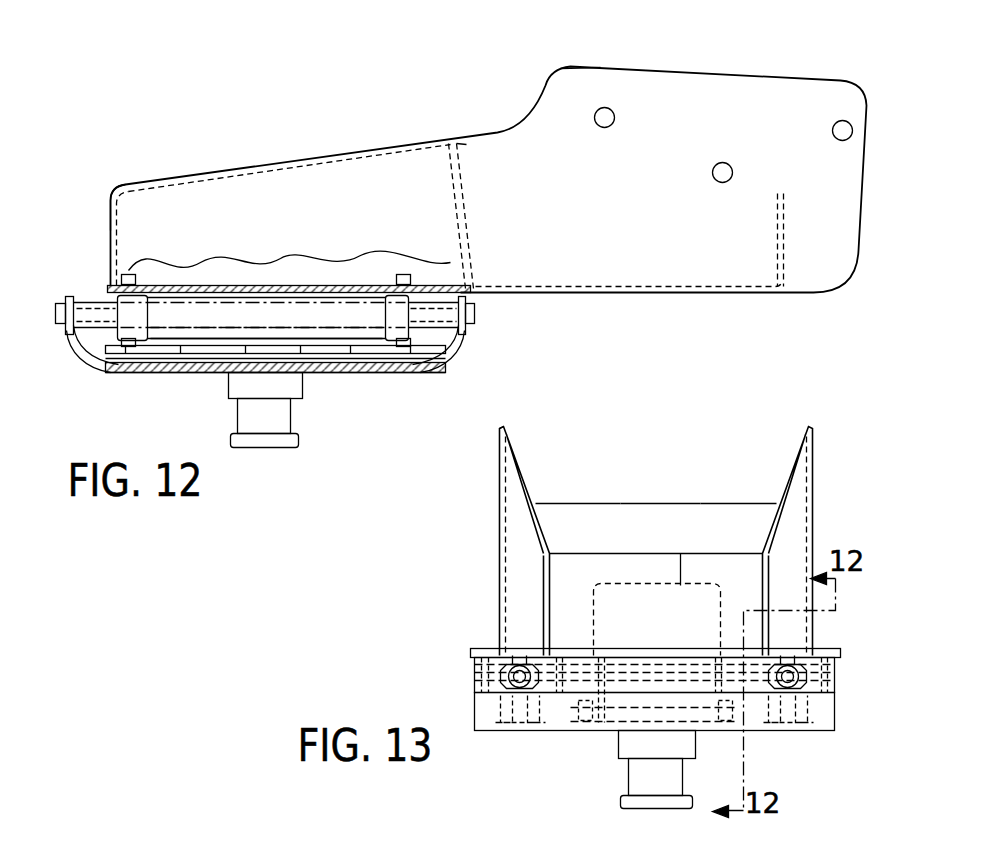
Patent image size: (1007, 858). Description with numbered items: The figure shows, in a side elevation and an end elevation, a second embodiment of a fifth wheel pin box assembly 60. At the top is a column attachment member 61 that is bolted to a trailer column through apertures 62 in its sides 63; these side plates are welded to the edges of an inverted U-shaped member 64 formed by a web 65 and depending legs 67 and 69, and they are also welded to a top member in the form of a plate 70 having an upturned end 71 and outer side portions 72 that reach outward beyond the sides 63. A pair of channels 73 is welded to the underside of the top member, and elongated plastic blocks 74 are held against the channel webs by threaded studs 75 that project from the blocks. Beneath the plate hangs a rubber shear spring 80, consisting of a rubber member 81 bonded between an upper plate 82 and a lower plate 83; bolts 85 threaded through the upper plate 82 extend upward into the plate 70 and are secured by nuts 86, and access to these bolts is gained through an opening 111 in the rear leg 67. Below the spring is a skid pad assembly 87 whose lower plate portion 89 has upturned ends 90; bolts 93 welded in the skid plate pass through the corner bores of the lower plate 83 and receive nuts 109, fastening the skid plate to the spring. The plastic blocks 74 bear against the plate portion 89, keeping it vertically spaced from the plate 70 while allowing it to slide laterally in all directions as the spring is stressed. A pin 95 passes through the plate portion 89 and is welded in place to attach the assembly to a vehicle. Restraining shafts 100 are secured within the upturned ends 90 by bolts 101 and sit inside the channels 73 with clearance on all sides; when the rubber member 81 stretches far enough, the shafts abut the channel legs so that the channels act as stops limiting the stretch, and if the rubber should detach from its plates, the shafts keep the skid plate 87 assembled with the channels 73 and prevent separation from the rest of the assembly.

In FIG. 12, the fifth wheel pin box assembly 60 is at (292, 140).
In FIG. 13, the fifth wheel pin box assembly 60 is at (420, 584).
In FIG. 12, the column attachment member 61 is at (690, 68).
In FIG. 13, the column attachment member 61 is at (816, 474).
In FIG. 12, the apertures 62 is at (832, 130).
In FIG. 12, the sides 63 is at (590, 80).
In FIG. 13, the sides 63 is at (495, 517).
In FIG. 12, the inverted U-shaped member 64 is at (473, 233).
In FIG. 13, the inverted U-shaped member 64 is at (566, 522).
In FIG. 12, the web 65 is at (380, 157).
In FIG. 13, the web 65 is at (663, 508).
In FIG. 12, the depending leg 67 is at (467, 200).
In FIG. 13, the depending leg 67 is at (614, 512).
In FIG. 12, the depending leg 69 is at (110, 214).
In FIG. 13, the depending leg 69 is at (656, 512).
In FIG. 12, the plate 70 is at (598, 286).
In FIG. 13, the plate 70 is at (686, 650).
In FIG. 12, the upturned end 71 is at (790, 210).
In FIG. 13, the outer side portions 72 is at (484, 645).
In FIG. 13, the channels 73 is at (466, 662).
In FIG. 13, the plastic blocks 74 is at (472, 707).
In FIG. 13, the threaded studs 75 is at (526, 740).
In FIG. 12, the rubber shear spring 80 is at (313, 340).
In FIG. 13, the rubber shear spring 80 is at (650, 672).
In FIG. 12, the rubber member 81 is at (332, 315).
In FIG. 13, the rubber member 81 is at (618, 672).
In FIG. 12, the upper plate 82 is at (248, 285).
In FIG. 13, the upper plate 82 is at (576, 656).
In FIG. 13, the lower plate 83 is at (610, 722).
In FIG. 12, the bolts 85 is at (147, 252).
In FIG. 12, the nuts 86 is at (128, 272).
In FIG. 12, the skid pad assembly 87 is at (398, 373).
In FIG. 12, the lower plate portion 89 is at (150, 373).
In FIG. 12, the upturned ends 90 is at (78, 352).
In FIG. 13, the bolts 93 is at (578, 728).
In FIG. 13, the pin 95 is at (618, 765).
In FIG. 12, the restraining shafts 100 is at (286, 310).
In FIG. 12, the bolts 101 is at (64, 296).
In FIG. 13, the bolts 101 is at (521, 655).
In FIG. 12, the nuts 109 is at (108, 346).
In FIG. 13, the opening 111 is at (676, 583).